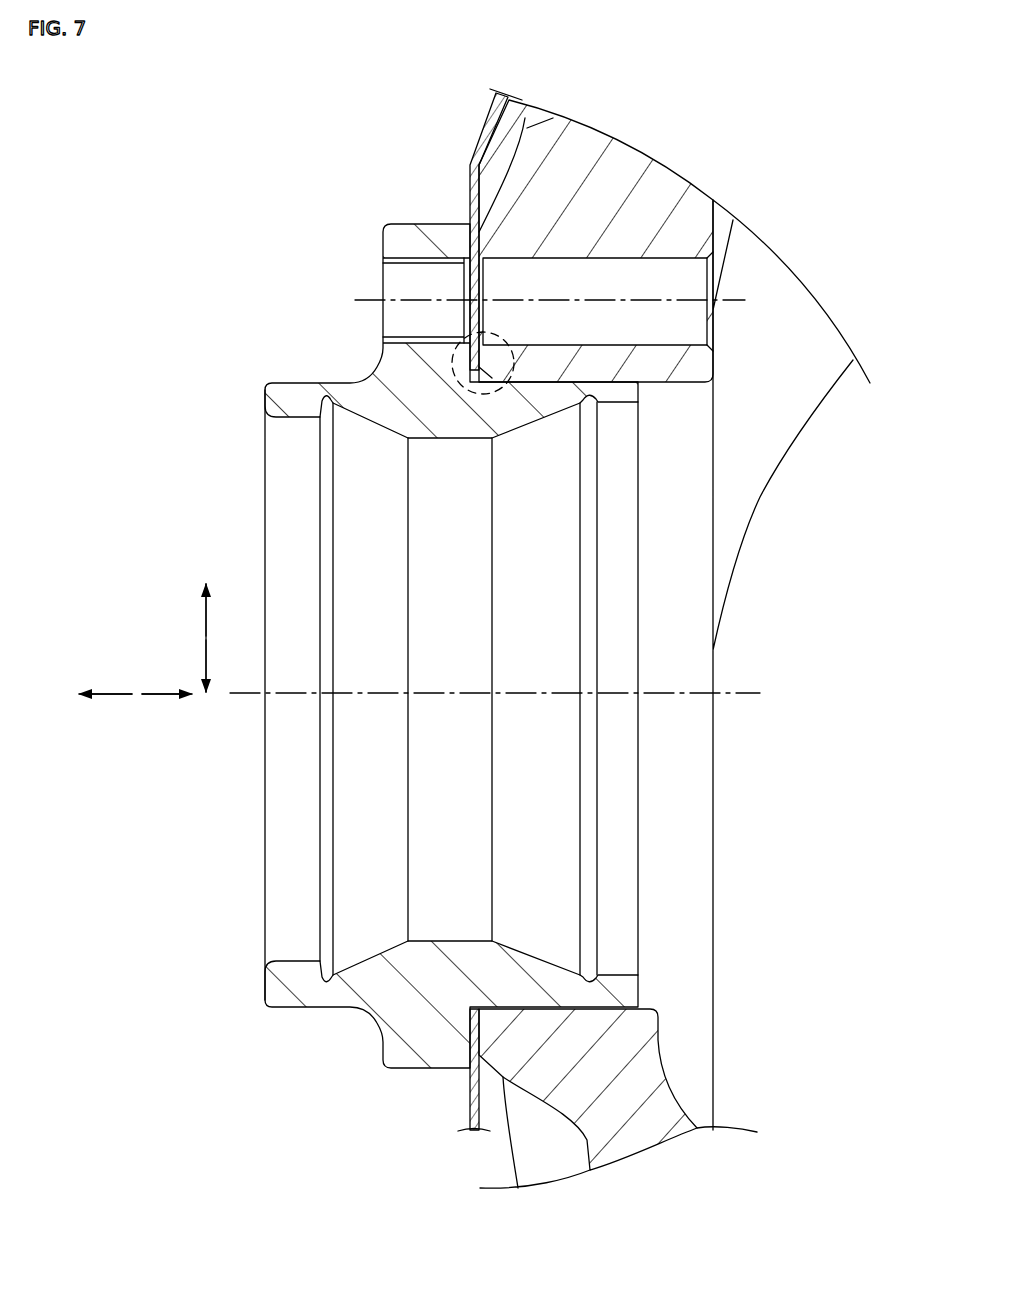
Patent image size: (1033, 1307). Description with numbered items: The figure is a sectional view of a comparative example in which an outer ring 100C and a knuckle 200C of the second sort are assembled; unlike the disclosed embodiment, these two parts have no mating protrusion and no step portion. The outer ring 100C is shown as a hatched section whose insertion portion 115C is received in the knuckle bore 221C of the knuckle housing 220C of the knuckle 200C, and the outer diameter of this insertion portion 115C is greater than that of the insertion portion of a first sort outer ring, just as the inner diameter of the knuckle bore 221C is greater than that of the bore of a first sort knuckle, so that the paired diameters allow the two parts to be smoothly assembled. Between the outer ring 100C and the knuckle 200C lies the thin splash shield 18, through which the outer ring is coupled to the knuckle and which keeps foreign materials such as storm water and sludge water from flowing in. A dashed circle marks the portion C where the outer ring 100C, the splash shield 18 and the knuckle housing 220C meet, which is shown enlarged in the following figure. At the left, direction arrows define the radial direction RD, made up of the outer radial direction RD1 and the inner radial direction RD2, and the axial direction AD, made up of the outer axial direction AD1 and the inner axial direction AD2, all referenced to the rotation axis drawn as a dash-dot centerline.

The splash shield 18 is at (490, 127).
The outer ring 100C is at (531, 646).
The insertion portion 115C is at (540, 397).
The portion C is at (455, 355).
The knuckle 200C is at (712, 644).
The knuckle housing 220C is at (672, 365).
The knuckle bore 221C is at (671, 564).
The radial direction RD is at (113, 610).
The outer radial direction RD1 is at (205, 612).
The inner radial direction RD2 is at (205, 663).
The axial direction AD is at (170, 770).
The outer axial direction AD1 is at (105, 698).
The inner axial direction AD2 is at (163, 698).